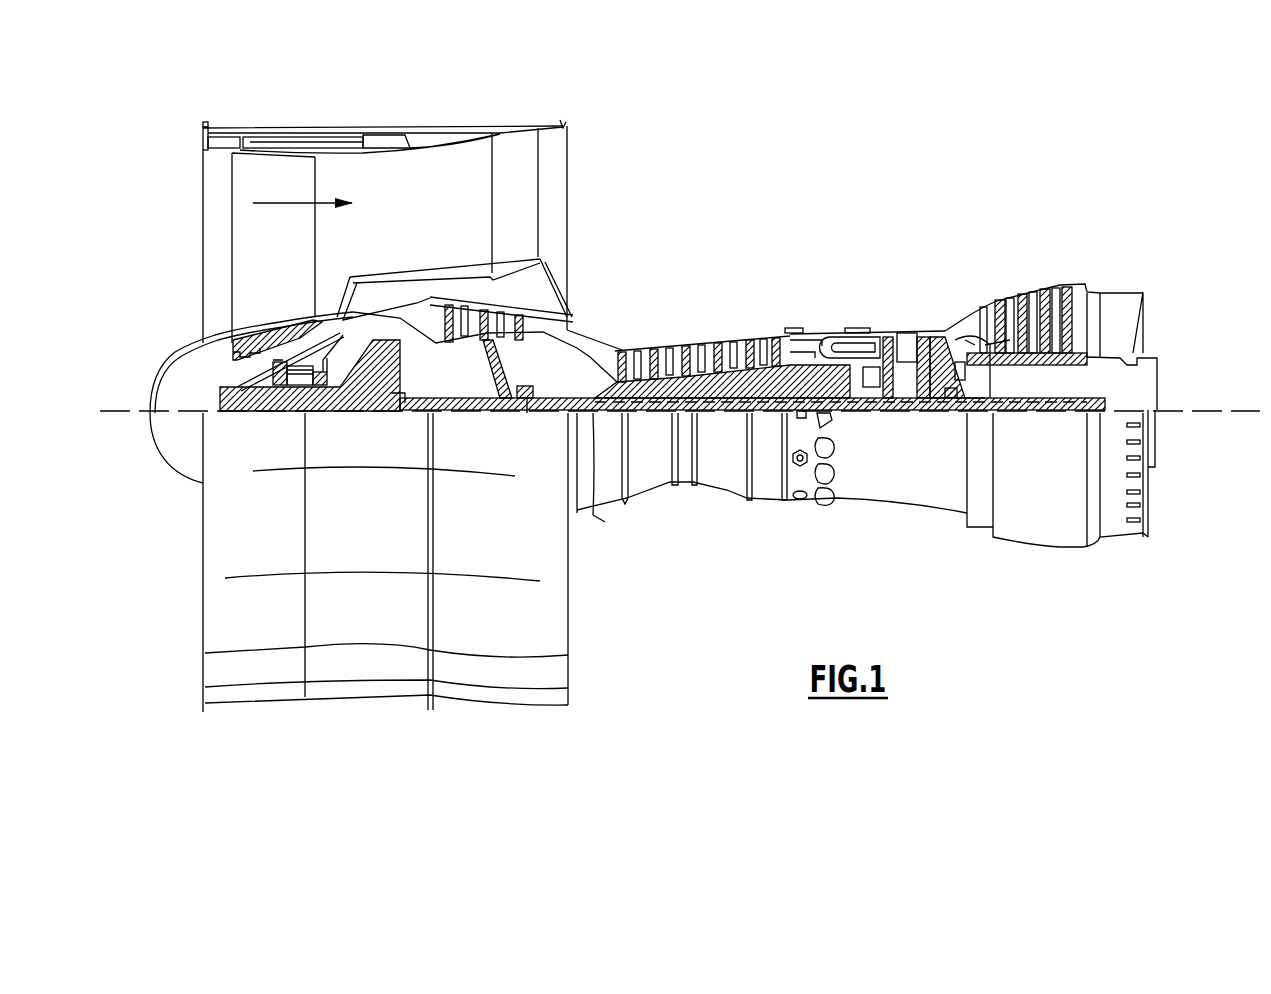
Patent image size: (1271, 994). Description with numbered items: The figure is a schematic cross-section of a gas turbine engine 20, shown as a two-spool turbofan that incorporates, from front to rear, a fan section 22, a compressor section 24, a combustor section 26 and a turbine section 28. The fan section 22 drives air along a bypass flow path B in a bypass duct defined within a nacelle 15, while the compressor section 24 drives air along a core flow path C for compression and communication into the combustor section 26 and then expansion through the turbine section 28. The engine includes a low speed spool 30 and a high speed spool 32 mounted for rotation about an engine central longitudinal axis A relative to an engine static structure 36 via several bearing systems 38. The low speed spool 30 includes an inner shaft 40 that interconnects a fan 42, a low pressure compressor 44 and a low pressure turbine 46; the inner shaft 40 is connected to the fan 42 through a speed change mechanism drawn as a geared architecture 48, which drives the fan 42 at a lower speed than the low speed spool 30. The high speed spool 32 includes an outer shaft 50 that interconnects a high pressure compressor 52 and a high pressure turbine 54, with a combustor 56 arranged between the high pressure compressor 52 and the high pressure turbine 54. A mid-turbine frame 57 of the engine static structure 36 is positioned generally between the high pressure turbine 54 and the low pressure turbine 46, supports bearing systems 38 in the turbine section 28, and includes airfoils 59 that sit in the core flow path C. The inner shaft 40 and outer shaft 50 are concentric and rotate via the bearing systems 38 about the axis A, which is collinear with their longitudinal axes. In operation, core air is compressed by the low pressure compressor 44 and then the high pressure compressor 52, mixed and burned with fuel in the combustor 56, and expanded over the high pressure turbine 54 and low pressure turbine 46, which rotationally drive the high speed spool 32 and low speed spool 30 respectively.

The nacelle 15 is at (387, 133).
The gas turbine engine 20 is at (850, 178).
The fan section 22 is at (359, 382).
The compressor section 24 is at (617, 316).
The combustor section 26 is at (840, 305).
The turbine section 28 is at (992, 268).
The low speed spool 30 is at (722, 415).
The high speed spool 32 is at (773, 363).
The engine static structure 36 is at (762, 506).
The bearing systems 38 is at (522, 403).
The inner shaft 40 is at (772, 476).
The fan 42 is at (289, 258).
The low pressure compressor 44 is at (490, 318).
The low pressure turbine 46 is at (1033, 293).
The geared architecture 48 is at (385, 398).
The outer shaft 50 is at (840, 390).
The high pressure compressor 52 is at (700, 377).
The high pressure turbine 54 is at (897, 337).
The combustor 56 is at (840, 347).
The mid-turbine frame 57 is at (950, 313).
The airfoils 59 is at (980, 382).
The engine central longitudinal axis A is at (1241, 411).
The bypass flow path B is at (287, 202).
The core flow path C is at (390, 310).